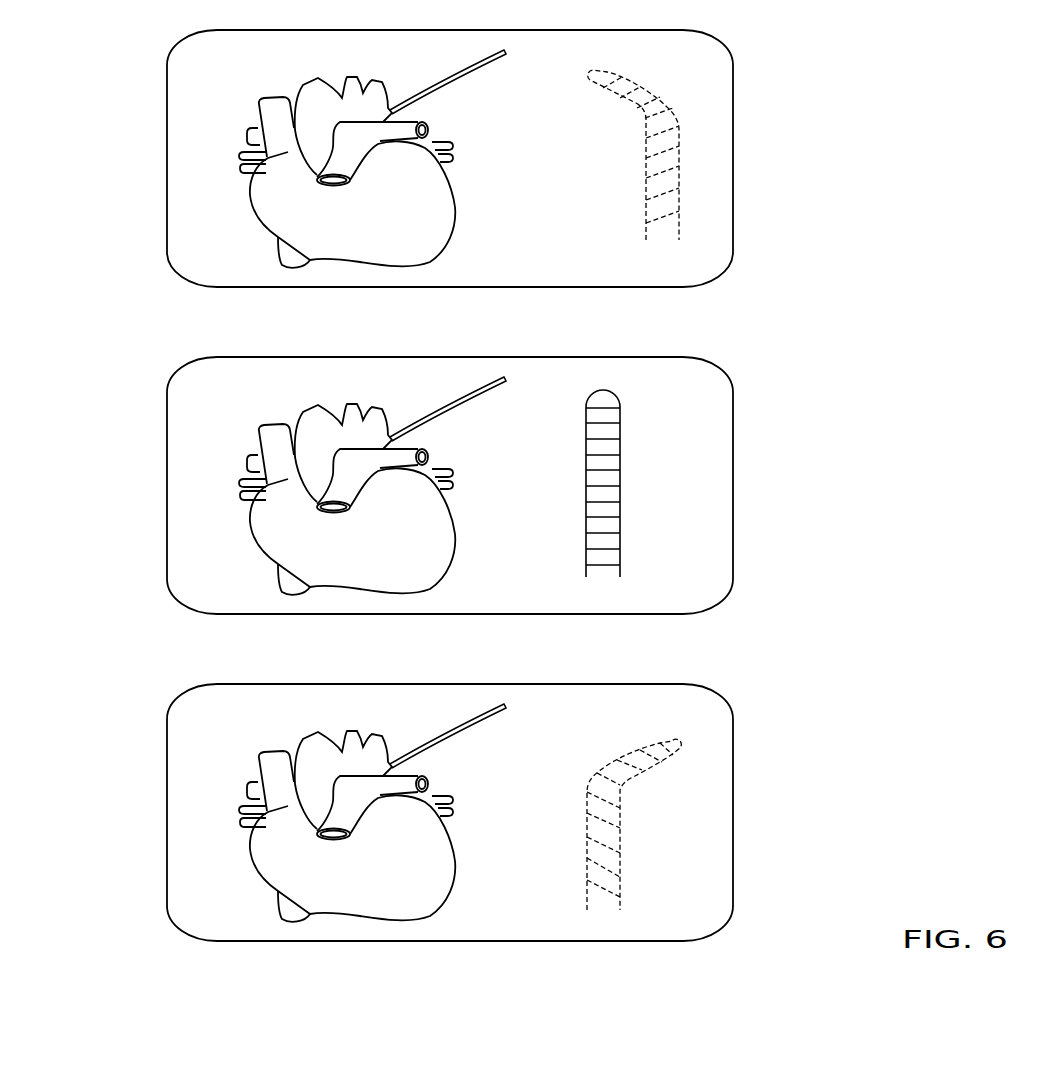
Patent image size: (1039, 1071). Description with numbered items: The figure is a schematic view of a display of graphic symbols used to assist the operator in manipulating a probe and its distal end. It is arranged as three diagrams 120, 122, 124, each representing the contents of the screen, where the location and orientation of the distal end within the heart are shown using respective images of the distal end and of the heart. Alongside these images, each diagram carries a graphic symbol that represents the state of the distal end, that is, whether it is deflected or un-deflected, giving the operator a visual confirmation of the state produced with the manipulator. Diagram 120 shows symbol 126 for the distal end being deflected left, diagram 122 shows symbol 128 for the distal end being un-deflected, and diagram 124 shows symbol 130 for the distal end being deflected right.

The diagram 120 is at (806, 141).
The diagram 122 is at (806, 395).
The diagram 124 is at (806, 750).
The graphic symbol 126 is at (670, 200).
The graphic symbol 128 is at (620, 453).
The graphic symbol 130 is at (622, 808).